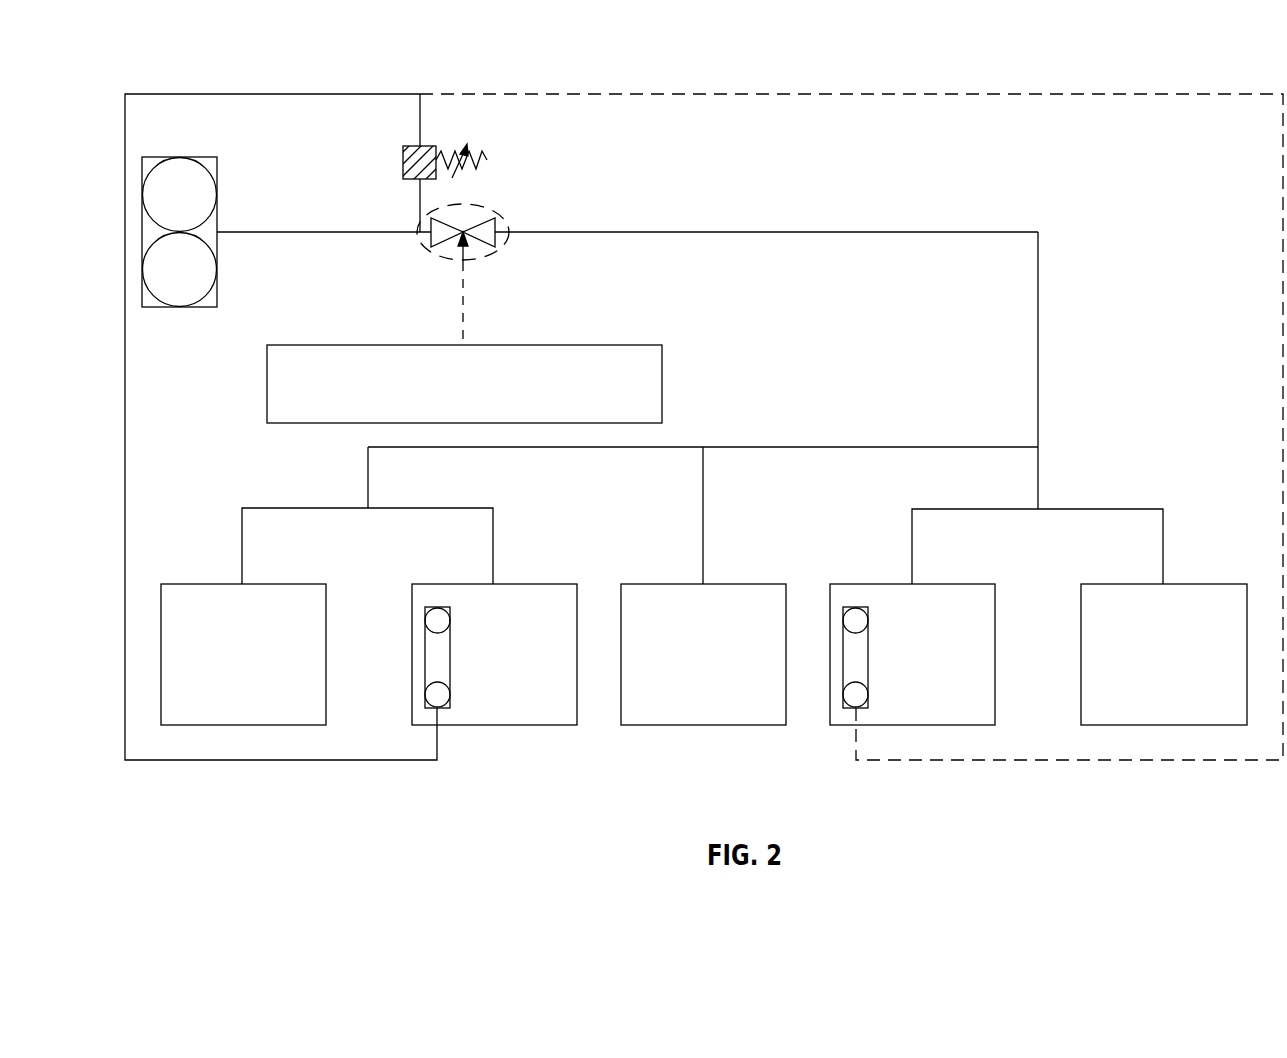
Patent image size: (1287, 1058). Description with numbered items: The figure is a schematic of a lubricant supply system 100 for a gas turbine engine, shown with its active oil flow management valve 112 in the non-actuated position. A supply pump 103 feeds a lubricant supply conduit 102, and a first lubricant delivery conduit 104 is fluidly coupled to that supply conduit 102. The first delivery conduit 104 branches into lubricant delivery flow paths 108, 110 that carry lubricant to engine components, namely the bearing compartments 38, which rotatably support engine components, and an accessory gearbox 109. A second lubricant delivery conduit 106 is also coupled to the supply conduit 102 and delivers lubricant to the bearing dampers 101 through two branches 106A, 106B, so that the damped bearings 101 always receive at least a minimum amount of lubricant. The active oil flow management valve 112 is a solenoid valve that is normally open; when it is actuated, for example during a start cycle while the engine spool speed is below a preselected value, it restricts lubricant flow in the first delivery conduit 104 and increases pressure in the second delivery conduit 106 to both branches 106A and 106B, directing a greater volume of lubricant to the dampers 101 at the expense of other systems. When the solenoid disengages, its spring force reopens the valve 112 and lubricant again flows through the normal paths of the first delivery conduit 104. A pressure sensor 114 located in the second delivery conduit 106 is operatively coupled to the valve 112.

The lubricant supply system 100 is at (107, 75).
The branch of second lubricant delivery conduit 106A is at (293, 94).
The branch of second lubricant delivery conduit 106B is at (718, 94).
The supply pump 103 is at (178, 157).
The lubricant supply conduit 102 is at (363, 232).
The second lubricant delivery conduit 106 is at (419, 131).
The pressure sensor 114 is at (443, 148).
The active oil flow management valve 112 is at (458, 206).
The first lubricant delivery conduit 104 is at (820, 232).
The lubricant delivery flow path 110 is at (1038, 328).
The lubricant delivery flow path 108 is at (845, 447).
The engine bearing compartment 38 is at (210, 584).
The bearing damper 101 is at (475, 584).
The accessory gearbox 109 is at (685, 584).